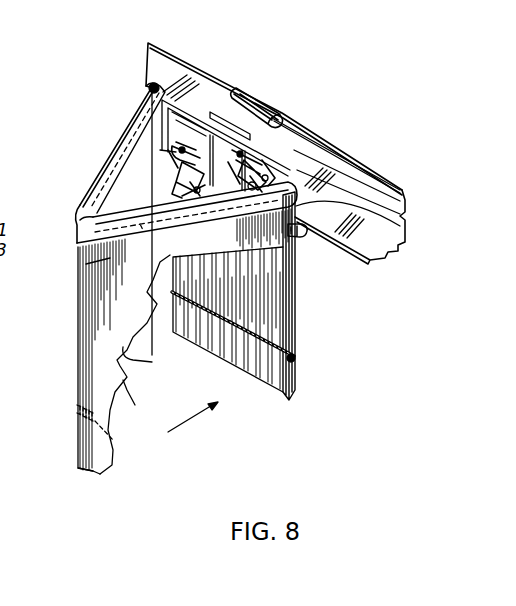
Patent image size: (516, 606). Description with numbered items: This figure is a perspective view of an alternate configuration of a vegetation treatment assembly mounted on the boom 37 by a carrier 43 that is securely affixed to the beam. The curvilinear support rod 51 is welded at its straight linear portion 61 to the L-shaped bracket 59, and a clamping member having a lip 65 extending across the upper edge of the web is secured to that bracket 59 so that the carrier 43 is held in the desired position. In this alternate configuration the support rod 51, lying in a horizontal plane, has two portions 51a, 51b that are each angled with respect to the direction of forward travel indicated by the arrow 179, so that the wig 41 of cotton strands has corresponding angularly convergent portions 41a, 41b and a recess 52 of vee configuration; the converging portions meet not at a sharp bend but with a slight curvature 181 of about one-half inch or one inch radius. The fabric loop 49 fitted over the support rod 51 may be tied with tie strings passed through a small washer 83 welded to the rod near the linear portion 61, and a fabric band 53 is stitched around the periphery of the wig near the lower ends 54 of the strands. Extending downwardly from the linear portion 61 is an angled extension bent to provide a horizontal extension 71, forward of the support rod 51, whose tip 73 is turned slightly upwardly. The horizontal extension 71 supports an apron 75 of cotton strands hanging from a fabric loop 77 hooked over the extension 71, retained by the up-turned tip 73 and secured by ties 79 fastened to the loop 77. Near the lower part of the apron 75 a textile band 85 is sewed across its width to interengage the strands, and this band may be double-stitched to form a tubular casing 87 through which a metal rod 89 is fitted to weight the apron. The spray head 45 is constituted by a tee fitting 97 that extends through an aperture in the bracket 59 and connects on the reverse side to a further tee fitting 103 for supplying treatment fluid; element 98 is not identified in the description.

The linear portion of support rod 61 is at (187, 80).
The boom 37 is at (213, 97).
The carrier 43 is at (218, 100).
The lip 65 is at (268, 96).
The L-shaped bracket 59 is at (262, 140).
The tee fitting 103 is at (248, 172).
The washer 83 is at (305, 222).
The curvilinear support rod 51 is at (281, 178).
The fabric loop 77 is at (350, 166).
The horizontal extension 71 is at (365, 182).
The tip 73 is at (405, 193).
The ties 79 is at (150, 135).
The support rod portion 51b is at (112, 126).
The fabric loop 49 is at (160, 150).
The tee fitting 97 is at (172, 160).
The latch body 98 is at (176, 178).
The spray head 45 is at (168, 193).
The slight curvature 181 is at (76, 222).
The support rod portion 51a is at (88, 263).
The wig 41 is at (80, 373).
The fabric band 53 is at (77, 410).
The lower ends of strands 54 is at (82, 470).
The wig portion 41a is at (152, 362).
The recess 52 is at (203, 394).
The wig portion 41b is at (127, 390).
The arrow 179 is at (186, 422).
The metal rod 89 is at (270, 390).
The apron 75 is at (297, 328).
The tubular casing 87 is at (297, 350).
The band 85 is at (296, 360).